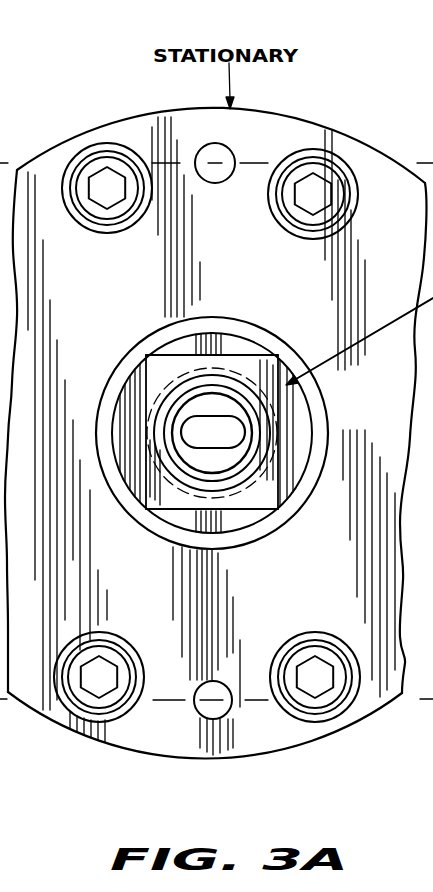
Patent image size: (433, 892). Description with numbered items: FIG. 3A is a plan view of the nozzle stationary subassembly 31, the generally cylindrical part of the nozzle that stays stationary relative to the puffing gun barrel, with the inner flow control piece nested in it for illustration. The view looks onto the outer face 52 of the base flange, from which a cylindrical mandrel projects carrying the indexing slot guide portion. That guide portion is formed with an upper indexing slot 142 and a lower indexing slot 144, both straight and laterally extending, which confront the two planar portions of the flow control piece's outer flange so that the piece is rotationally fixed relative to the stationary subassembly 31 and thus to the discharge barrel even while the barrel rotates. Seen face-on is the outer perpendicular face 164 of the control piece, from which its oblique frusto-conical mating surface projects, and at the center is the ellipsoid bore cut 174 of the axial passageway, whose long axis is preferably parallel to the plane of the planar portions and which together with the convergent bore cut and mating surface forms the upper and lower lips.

The nozzle stationary subassembly 31 is at (307, 120).
The outer face 52 is at (277, 265).
The upper indexing slot 142 is at (223, 342).
The lower indexing slot 144 is at (224, 520).
The outer perpendicular face 164 is at (152, 376).
The ellipsoid bore cut 174 is at (244, 437).